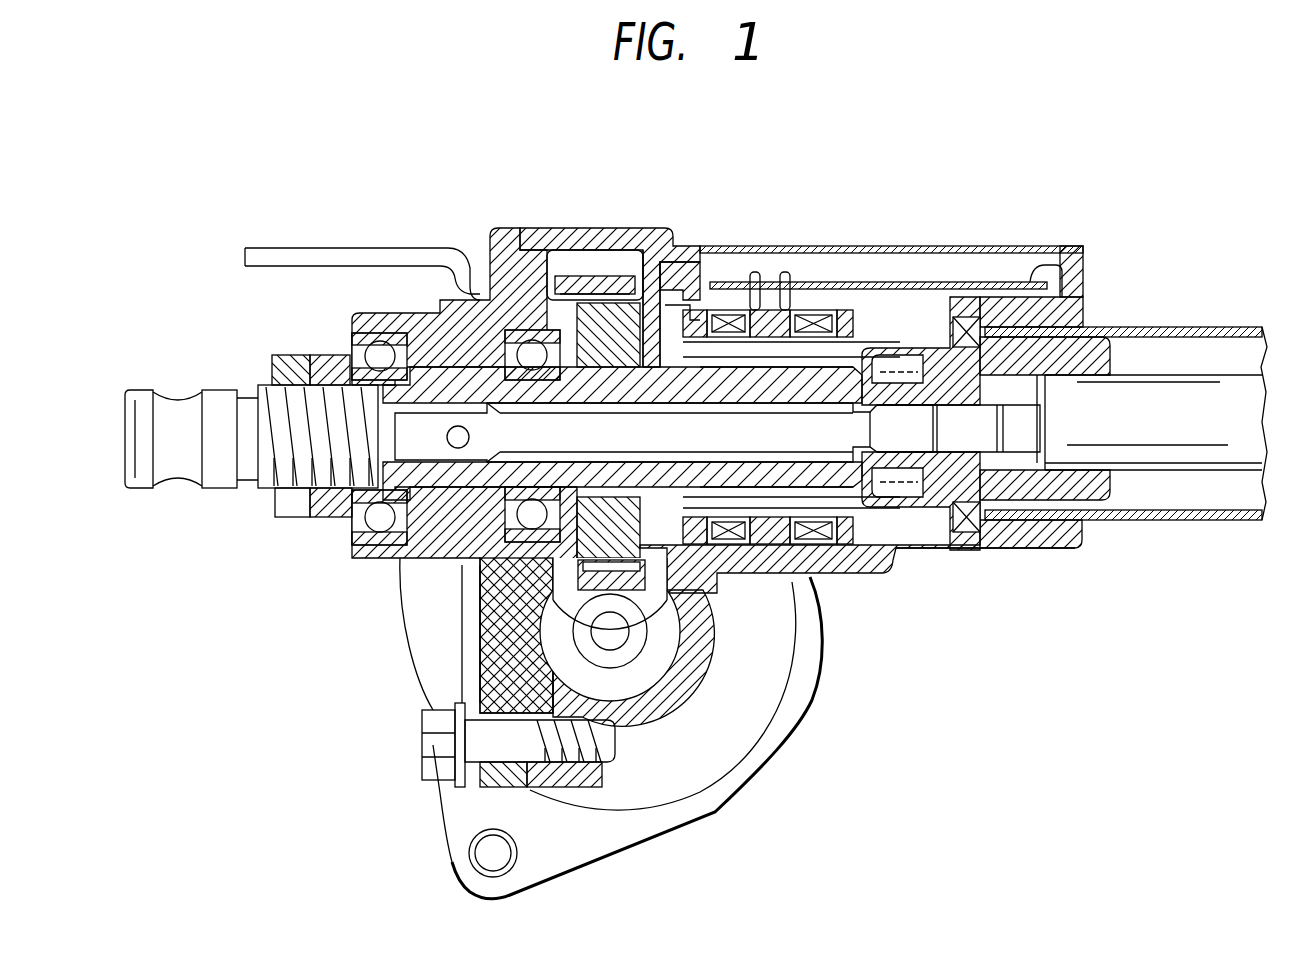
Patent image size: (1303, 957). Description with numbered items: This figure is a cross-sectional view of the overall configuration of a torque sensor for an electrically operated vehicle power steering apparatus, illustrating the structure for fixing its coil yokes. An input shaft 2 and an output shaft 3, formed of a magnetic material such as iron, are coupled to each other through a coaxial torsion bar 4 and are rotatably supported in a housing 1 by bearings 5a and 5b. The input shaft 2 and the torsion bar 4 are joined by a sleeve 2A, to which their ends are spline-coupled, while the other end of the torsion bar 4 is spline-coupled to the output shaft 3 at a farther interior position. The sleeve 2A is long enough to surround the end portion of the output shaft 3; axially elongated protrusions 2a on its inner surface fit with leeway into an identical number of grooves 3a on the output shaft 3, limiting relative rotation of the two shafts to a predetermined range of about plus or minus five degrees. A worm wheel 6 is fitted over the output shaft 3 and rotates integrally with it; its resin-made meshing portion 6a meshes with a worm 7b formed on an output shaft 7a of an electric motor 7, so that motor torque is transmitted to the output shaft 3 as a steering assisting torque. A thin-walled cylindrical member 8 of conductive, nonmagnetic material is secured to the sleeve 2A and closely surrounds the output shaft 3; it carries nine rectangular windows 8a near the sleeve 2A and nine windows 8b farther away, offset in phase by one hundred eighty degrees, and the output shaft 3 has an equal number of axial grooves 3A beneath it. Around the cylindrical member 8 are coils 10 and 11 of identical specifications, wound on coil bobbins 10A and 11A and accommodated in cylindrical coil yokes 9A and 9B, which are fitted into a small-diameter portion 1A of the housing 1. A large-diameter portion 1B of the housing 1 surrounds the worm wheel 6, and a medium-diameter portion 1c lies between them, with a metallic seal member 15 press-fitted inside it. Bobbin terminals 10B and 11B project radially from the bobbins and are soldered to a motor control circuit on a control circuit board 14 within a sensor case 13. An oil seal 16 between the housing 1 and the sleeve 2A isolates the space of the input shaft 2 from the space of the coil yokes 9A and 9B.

The housing 1 is at (522, 228).
The small-diameter portion 1A is at (897, 287).
The large-diameter portion 1B is at (573, 247).
The medium-diameter portion 1c is at (650, 250).
The input shaft 2 is at (1232, 470).
The sleeve 2A is at (1100, 365).
The protrusions 2a is at (947, 286).
The output shaft 3 is at (272, 455).
The grooves 3A is at (644, 430).
The grooves 3a is at (915, 345).
The torsion bar 4 is at (723, 235).
The bearing 5a is at (470, 300).
The bearing 5b is at (362, 338).
The worm wheel 6 is at (601, 258).
The meshing portion 6a is at (622, 268).
The electric motor 7 is at (907, 197).
The output shaft 7a is at (613, 633).
The worm 7b is at (640, 703).
The cylindrical member 8 is at (920, 292).
The windows 8a is at (803, 347).
The windows 8b is at (713, 505).
The coil yoke 9A is at (870, 548).
The coil yoke 9B is at (722, 590).
The coil 10 is at (850, 548).
The coil bobbin 10A is at (890, 548).
The bobbin terminal 10B is at (800, 284).
The coil 11 is at (742, 572).
The coil bobbin 11A is at (597, 653).
The bobbin terminal 11B is at (753, 272).
The sensor case 13 is at (1047, 246).
The control circuit board 14 is at (1070, 278).
The seal member 15 is at (685, 283).
The oil seal 16 is at (972, 532).